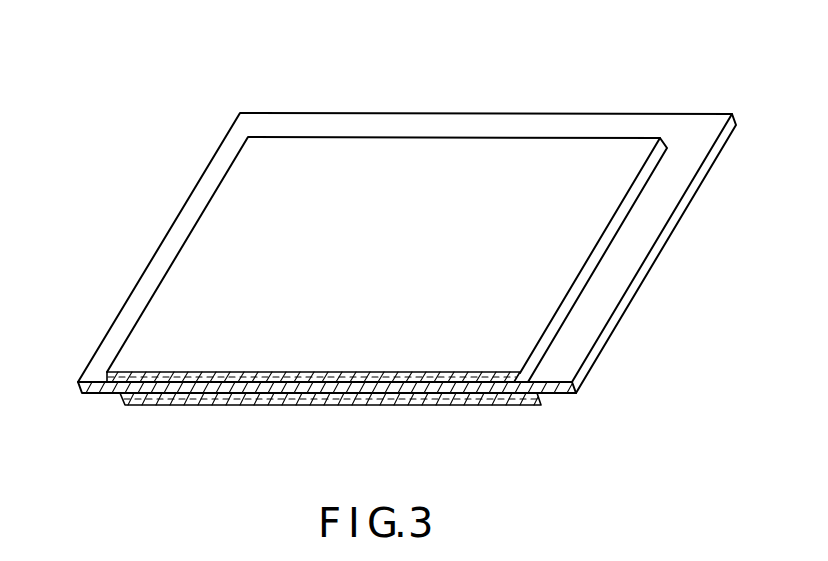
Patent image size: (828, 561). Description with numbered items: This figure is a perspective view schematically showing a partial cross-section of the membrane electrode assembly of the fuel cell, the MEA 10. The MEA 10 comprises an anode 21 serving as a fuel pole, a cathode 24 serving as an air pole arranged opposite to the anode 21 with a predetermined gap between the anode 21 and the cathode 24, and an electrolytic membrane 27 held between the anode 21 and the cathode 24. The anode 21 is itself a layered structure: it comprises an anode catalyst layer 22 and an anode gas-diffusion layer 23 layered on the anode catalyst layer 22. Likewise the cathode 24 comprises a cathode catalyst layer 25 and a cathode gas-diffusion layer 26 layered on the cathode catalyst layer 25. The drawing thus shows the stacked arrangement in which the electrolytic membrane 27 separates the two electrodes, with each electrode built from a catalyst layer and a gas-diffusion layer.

The MEA 10 is at (387, 243).
The anode 21 is at (338, 438).
The anode catalyst layer 22 is at (488, 399).
The anode gas-diffusion layer 23 is at (518, 399).
The cathode 24 is at (408, 133).
The cathode catalyst layer 25 is at (105, 382).
The cathode gas-diffusion layer 26 is at (133, 373).
The electrolytic membrane 27 is at (641, 280).